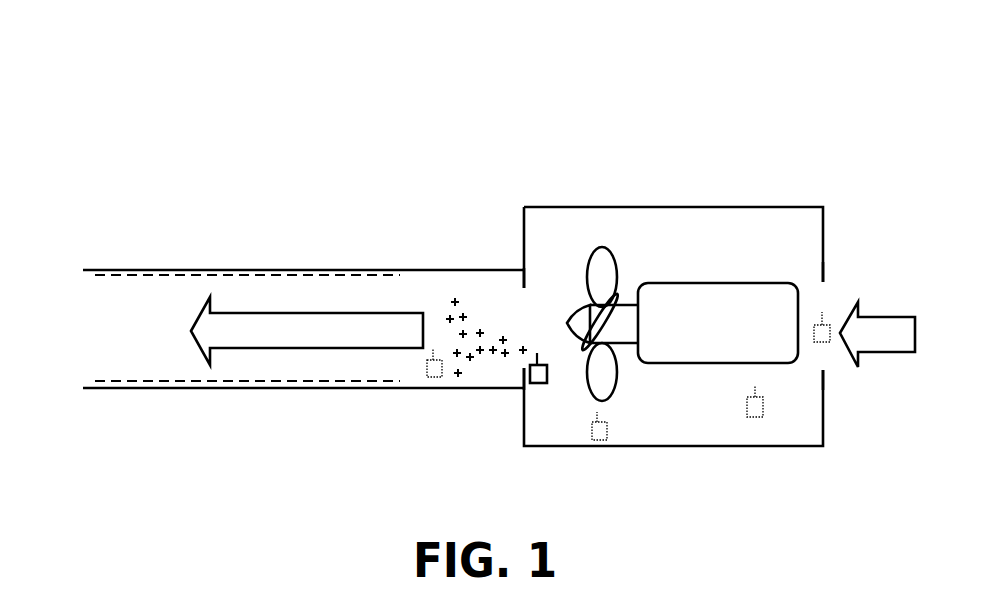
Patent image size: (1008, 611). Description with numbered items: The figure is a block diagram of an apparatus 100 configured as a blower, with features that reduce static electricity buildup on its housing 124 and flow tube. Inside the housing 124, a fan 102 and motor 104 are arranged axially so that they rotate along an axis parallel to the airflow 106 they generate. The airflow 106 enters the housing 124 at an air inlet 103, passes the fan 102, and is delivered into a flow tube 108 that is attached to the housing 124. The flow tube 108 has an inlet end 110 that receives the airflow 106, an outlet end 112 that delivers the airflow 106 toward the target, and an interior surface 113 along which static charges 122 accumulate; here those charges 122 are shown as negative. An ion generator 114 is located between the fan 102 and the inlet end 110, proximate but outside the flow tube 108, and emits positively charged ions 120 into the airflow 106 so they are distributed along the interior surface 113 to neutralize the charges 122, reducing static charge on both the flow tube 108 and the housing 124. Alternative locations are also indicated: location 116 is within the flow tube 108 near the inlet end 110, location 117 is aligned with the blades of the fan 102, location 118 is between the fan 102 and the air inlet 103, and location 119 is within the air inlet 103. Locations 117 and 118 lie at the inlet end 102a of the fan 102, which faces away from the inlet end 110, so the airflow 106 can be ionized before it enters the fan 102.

The apparatus 100 is at (762, 118).
The fan 102 is at (602, 392).
The inlet end of the fan 102a is at (622, 372).
The air inlet 103 is at (828, 308).
The motor 104 is at (709, 352).
The airflow 106 is at (372, 340).
The flow tube 108 is at (340, 268).
The inlet end 110 is at (493, 285).
The outlet end 112 is at (111, 287).
The interior surface 113 is at (155, 275).
The ion generator 114 is at (530, 378).
The ion generator location 116 is at (437, 377).
The ion generator location 117 is at (592, 430).
The ion generator location 118 is at (760, 410).
The ion generator location 119 is at (825, 343).
The ions 120 is at (455, 298).
The charges 122 is at (215, 280).
The housing 124 is at (645, 206).